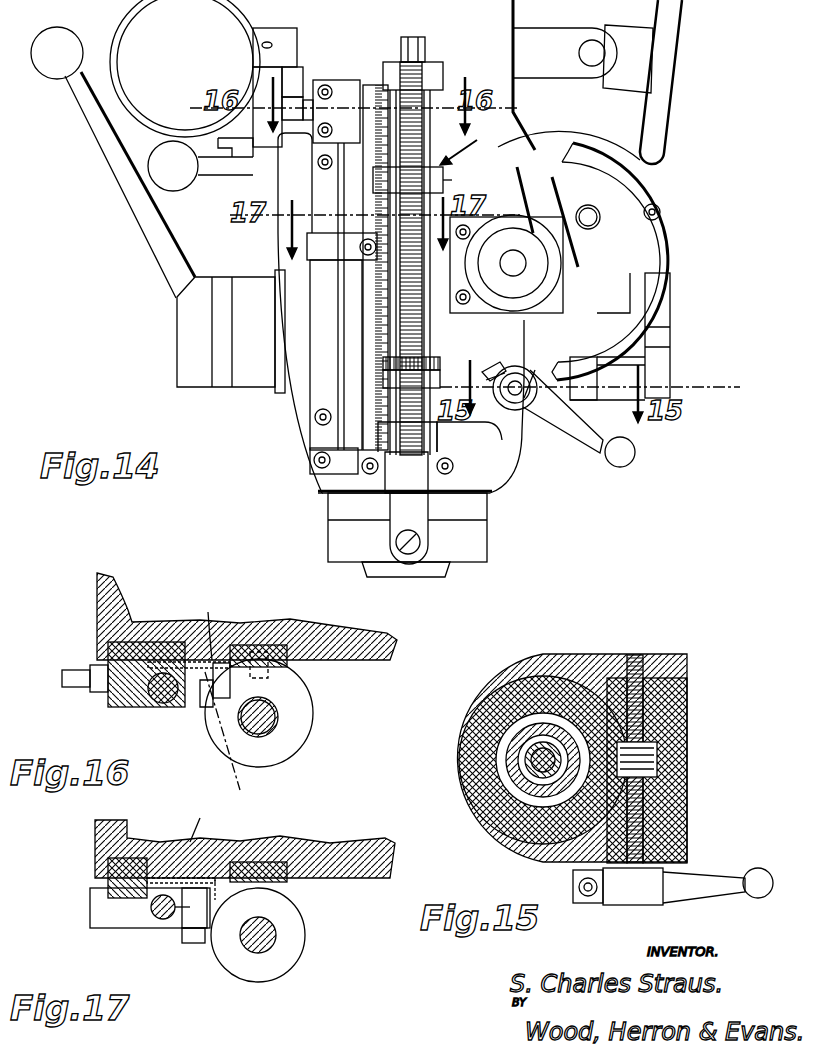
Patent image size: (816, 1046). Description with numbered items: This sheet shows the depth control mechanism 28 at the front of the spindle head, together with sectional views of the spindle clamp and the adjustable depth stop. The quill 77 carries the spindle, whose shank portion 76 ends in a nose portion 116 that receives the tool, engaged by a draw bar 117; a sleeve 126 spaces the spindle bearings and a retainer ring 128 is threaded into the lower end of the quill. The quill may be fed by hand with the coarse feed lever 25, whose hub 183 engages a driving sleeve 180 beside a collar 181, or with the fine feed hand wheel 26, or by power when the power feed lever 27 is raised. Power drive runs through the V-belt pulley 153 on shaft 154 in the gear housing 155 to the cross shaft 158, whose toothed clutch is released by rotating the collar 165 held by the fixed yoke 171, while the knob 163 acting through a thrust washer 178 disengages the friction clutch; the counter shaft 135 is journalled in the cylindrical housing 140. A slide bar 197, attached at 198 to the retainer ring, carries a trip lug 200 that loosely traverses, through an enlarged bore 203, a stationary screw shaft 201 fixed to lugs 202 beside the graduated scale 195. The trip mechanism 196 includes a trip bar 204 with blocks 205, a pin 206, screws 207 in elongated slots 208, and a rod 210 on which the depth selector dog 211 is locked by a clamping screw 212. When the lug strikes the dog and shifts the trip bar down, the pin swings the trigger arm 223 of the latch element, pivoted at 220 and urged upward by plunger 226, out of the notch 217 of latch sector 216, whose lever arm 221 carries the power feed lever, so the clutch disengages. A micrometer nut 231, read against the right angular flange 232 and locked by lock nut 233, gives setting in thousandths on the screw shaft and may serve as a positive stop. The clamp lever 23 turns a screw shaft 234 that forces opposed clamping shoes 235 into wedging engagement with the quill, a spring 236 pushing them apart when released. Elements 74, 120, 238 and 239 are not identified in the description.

In FIG. 14, the clamp lever 23 is at (594, 436).
In FIG. 15, the clamp lever 23 is at (725, 890).
In FIG. 14, the coarse feed lever 25 is at (72, 88).
In FIG. 14, the fine feed hand wheel 26 is at (620, 255).
In FIG. 14, the power feed lever 27 is at (168, 154).
In FIG. 14, the depth control mechanism 28 is at (471, 140).
In FIG. 15, the bearing housing 74 is at (492, 838).
In FIG. 15, the spindle shank portion 76 is at (545, 680).
In FIG. 14, the quill 77 is at (330, 513).
In FIG. 15, the quill 77 is at (487, 800).
In FIG. 14, the nose portion 116 is at (452, 566).
In FIG. 15, the draw bar 117 is at (520, 765).
In FIG. 14, the connecting rod 120 is at (658, 130).
In FIG. 15, the sleeve 126 is at (500, 752).
In FIG. 14, the retainer ring 128 is at (475, 551).
In FIG. 14, the counter shaft 135 is at (232, 5).
In FIG. 14, the cylindrical housing 140 is at (130, 12).
In FIG. 14, the V-belt pulley 153 is at (660, 178).
In FIG. 14, the shaft 154 is at (594, 217).
In FIG. 14, the gear housing 155 is at (608, 157).
In FIG. 14, the cross shaft 158 is at (518, 268).
In FIG. 14, the knob 163 is at (660, 381).
In FIG. 14, the clutch control collar 165 is at (542, 235).
In FIG. 14, the fixed yoke 171 is at (478, 220).
In FIG. 14, the thrust washer 178 is at (590, 393).
In FIG. 14, the driving sleeve 180 is at (221, 290).
In FIG. 14, the collar 181 is at (250, 372).
In FIG. 14, the hub 183 is at (178, 327).
In FIG. 14, the graduated scale 195 is at (410, 258).
In FIG. 16, the graduated scale 195 is at (220, 625).
In FIG. 17, the graduated scale 195 is at (213, 819).
In FIG. 14, the trip mechanism 196 is at (300, 70).
In FIG. 14, the slide bar 197 is at (426, 322).
In FIG. 16, the slide bar 197 is at (280, 642).
In FIG. 17, the slide bar 197 is at (285, 842).
In FIG. 14, the slide bar attachment 198 is at (412, 550).
In FIG. 14, the trip lug 200 is at (469, 178).
In FIG. 16, the trip lug 200 is at (290, 748).
In FIG. 14, the stationary screw shaft 201 is at (428, 352).
In FIG. 16, the stationary screw shaft 201 is at (270, 716).
In FIG. 17, the stationary screw shaft 201 is at (276, 940).
In FIG. 14, the lugs 202 is at (428, 62).
In FIG. 16, the enlarged bore 203 is at (268, 700).
In FIG. 14, the trip bar 204 is at (320, 327).
In FIG. 16, the trip bar 204 is at (128, 648).
In FIG. 17, the trip bar 204 is at (130, 840).
In FIG. 14, the blocks 205 is at (352, 95).
In FIG. 16, the blocks 205 is at (150, 708).
In FIG. 14, the pin 206 is at (312, 110).
In FIG. 16, the pin 206 is at (72, 672).
In FIG. 14, the screws 207 is at (322, 425).
In FIG. 14, the elongated slots 208 is at (323, 410).
In FIG. 14, the rod 210 is at (348, 322).
In FIG. 16, the rod 210 is at (163, 705).
In FIG. 17, the rod 210 is at (162, 920).
In FIG. 14, the depth selector dog 211 is at (345, 246).
In FIG. 16, the depth selector dog 211 is at (235, 731).
In FIG. 17, the depth selector dog 211 is at (100, 912).
In FIG. 14, the clamping screw 212 is at (372, 262).
In FIG. 17, the clamping screw 212 is at (195, 945).
In FIG. 14, the latch sector 216 is at (275, 30).
In FIG. 14, the notch 217 is at (258, 72).
In FIG. 14, the pivotal connection 220 is at (270, 117).
In FIG. 14, the lever arm 221 is at (255, 165).
In FIG. 14, the trigger arm 223 is at (300, 85).
In FIG. 14, the plunger 226 is at (294, 130).
In FIG. 14, the micrometer nut 231 is at (440, 367).
In FIG. 17, the micrometer nut 231 is at (305, 925).
In FIG. 14, the right angular flange 232 is at (408, 180).
In FIG. 16, the right angular flange 232 is at (205, 720).
In FIG. 17, the right angular flange 232 is at (225, 848).
In FIG. 14, the lock nut 233 is at (392, 380).
In FIG. 14, the screw shaft 234 is at (516, 410).
In FIG. 15, the screw shaft 234 is at (645, 797).
In FIG. 15, the clamping shoes 235 is at (660, 715).
In FIG. 15, the spring 236 is at (657, 755).
In FIG. 14, the arm 238 is at (520, 45).
In FIG. 14, the pivot pin 239 is at (592, 53).